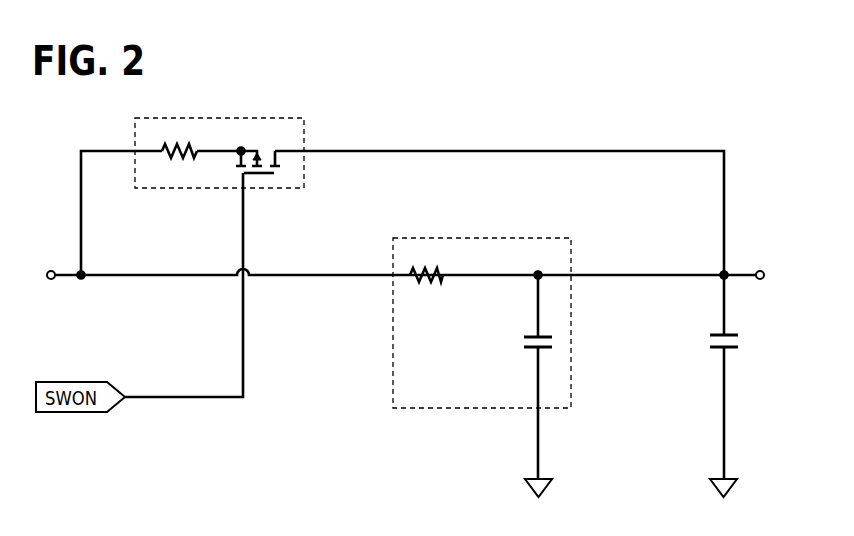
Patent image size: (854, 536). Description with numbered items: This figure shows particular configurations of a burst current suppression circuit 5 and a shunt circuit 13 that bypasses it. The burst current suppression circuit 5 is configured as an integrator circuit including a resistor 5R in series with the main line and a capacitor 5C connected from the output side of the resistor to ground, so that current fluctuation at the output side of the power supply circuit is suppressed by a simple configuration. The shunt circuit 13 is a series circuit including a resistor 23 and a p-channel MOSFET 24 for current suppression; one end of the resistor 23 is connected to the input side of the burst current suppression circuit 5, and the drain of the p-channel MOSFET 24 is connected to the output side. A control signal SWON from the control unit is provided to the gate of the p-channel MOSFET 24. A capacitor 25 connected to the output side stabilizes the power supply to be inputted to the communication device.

The shunt circuit 13 is at (304, 127).
The resistor 23 is at (172, 157).
The p-channel MOSFET 24 is at (258, 175).
The burst current suppression circuit 5 is at (571, 248).
The resistor 5R is at (423, 282).
The capacitor 5C is at (524, 340).
The capacitor 25 is at (712, 341).